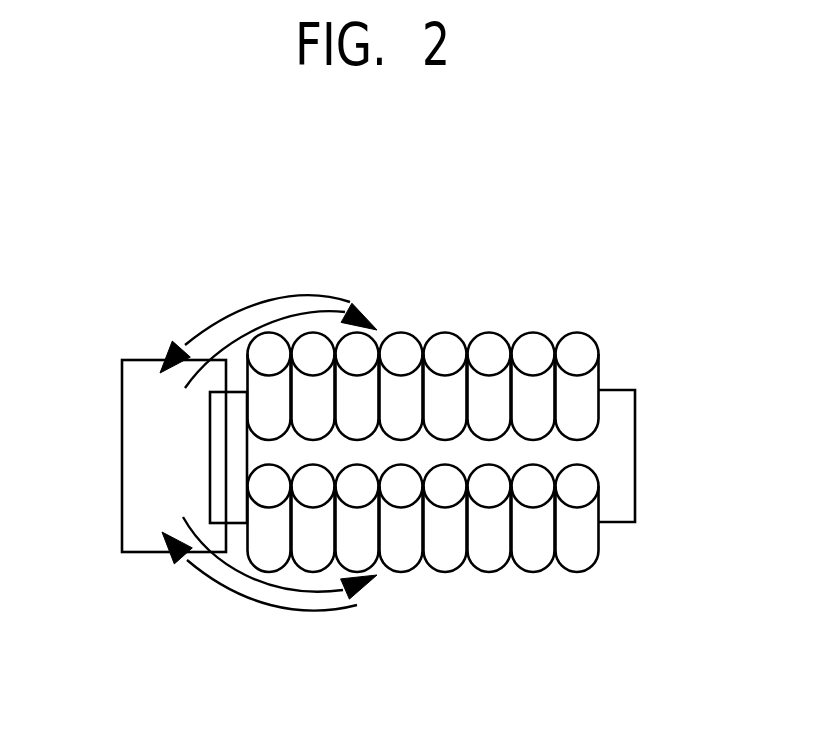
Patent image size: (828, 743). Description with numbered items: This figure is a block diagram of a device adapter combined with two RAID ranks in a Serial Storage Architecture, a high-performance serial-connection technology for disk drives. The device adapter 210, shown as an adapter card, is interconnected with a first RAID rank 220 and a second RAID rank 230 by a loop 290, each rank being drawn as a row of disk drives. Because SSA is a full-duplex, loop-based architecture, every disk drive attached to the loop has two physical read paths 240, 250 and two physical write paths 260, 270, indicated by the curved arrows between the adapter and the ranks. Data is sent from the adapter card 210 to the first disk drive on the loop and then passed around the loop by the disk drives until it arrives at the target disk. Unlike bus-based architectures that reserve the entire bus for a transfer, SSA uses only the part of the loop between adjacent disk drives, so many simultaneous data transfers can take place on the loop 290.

The device adapter 210 is at (127, 443).
The RAID rank 220 is at (597, 275).
The RAID rank 230 is at (255, 618).
The read path 240 is at (192, 334).
The read path 250 is at (197, 577).
The write path 260 is at (247, 328).
The write path 270 is at (242, 583).
The loop 290 is at (635, 442).